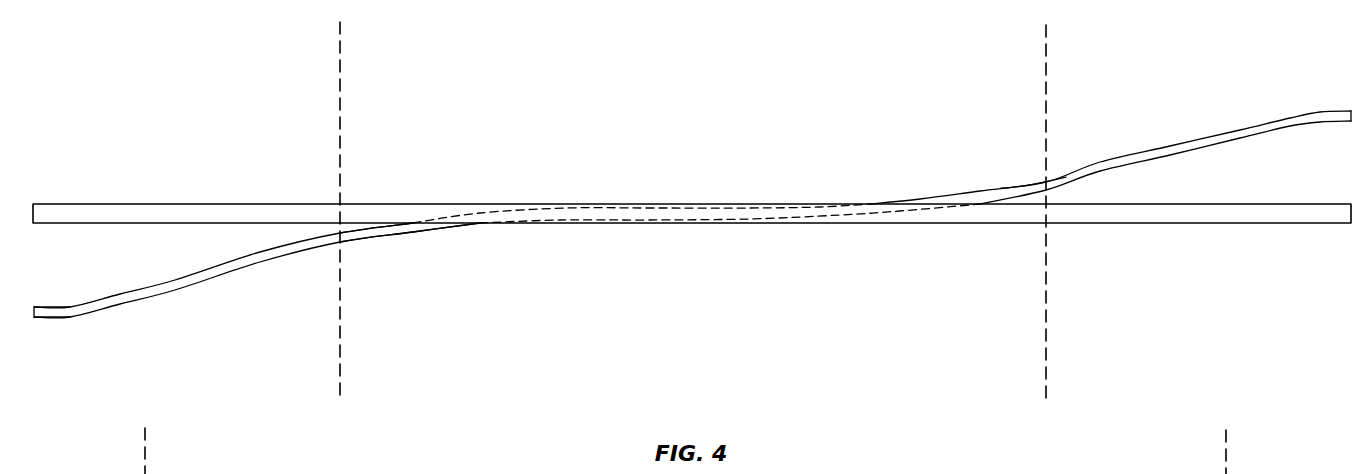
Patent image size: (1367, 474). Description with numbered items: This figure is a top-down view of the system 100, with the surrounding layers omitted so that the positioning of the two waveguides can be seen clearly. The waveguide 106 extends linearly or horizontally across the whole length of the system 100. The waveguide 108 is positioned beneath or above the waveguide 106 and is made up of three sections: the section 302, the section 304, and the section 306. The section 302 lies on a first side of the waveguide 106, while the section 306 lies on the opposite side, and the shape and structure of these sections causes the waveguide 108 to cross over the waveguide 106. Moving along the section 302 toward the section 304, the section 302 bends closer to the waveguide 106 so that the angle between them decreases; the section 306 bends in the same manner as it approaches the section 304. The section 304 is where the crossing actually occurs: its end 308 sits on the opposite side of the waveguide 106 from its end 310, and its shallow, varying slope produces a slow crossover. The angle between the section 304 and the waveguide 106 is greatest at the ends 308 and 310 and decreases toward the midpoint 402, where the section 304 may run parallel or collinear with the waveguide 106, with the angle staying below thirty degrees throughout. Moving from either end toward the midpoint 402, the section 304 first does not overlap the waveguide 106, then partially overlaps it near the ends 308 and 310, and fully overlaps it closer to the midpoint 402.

The system 100 is at (700, 62).
The waveguide 106 is at (120, 213).
The waveguide 108 is at (60, 313).
The section 302 is at (175, 280).
The section 304 is at (960, 197).
The section 306 is at (1205, 150).
The end 308 is at (380, 237).
The end 310 is at (1045, 183).
The midpoint 402 is at (693, 213).